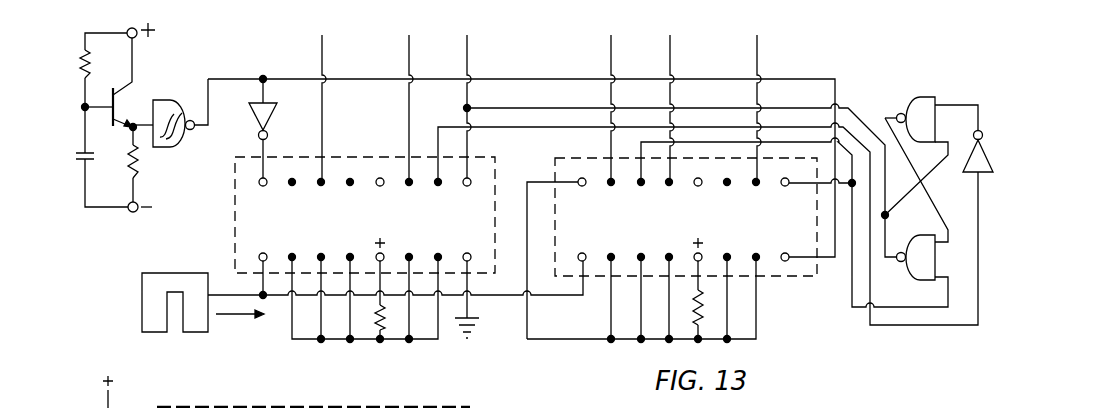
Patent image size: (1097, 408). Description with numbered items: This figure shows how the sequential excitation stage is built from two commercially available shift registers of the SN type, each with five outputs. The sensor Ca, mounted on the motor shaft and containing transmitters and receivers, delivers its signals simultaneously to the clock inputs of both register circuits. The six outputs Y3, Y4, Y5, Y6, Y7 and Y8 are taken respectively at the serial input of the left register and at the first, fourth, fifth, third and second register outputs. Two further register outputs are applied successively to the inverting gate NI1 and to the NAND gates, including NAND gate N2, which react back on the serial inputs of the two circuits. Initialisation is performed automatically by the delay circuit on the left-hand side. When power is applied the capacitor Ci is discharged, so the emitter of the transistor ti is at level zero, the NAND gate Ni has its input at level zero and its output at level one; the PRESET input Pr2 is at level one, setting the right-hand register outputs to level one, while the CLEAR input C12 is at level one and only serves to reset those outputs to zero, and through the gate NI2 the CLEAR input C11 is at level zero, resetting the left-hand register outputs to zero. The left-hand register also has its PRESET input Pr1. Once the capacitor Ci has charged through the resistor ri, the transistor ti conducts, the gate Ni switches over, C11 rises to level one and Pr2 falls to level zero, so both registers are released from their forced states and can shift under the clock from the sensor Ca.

The resistor ri is at (117, 88).
The transistor ti is at (110, 120).
The capacitor Ci is at (114, 182).
The NAND gate Ni is at (170, 111).
The gate NI2 is at (276, 127).
The output Y8 is at (321, 96).
The output Y5 is at (408, 96).
The output Y3 is at (466, 96).
The output Y4 is at (610, 96).
The output Y7 is at (669, 96).
The output Y6 is at (756, 96).
The CLEAR input C11 is at (345, 215).
The CLEAR input C12 is at (668, 248).
The PRESET input Pr1 is at (398, 302).
The PRESET input Pr2 is at (664, 302).
The sensor Ca is at (155, 322).
The NAND gate N2 is at (930, 173).
The inverting gate NI1 is at (959, 166).